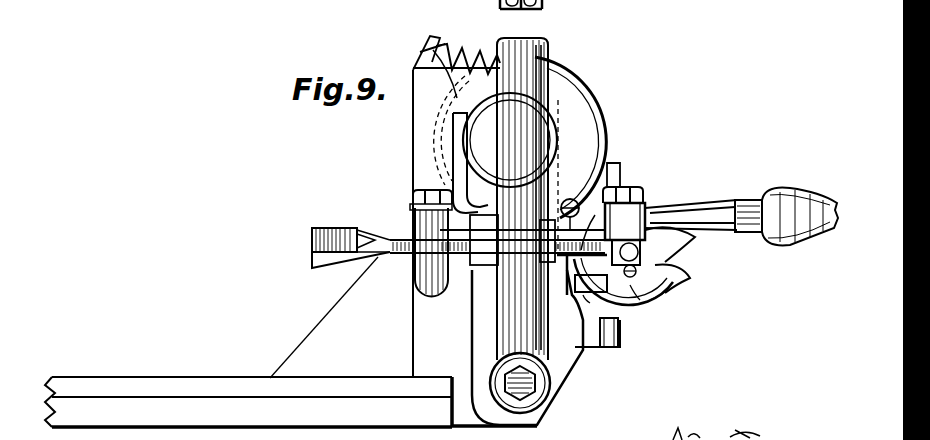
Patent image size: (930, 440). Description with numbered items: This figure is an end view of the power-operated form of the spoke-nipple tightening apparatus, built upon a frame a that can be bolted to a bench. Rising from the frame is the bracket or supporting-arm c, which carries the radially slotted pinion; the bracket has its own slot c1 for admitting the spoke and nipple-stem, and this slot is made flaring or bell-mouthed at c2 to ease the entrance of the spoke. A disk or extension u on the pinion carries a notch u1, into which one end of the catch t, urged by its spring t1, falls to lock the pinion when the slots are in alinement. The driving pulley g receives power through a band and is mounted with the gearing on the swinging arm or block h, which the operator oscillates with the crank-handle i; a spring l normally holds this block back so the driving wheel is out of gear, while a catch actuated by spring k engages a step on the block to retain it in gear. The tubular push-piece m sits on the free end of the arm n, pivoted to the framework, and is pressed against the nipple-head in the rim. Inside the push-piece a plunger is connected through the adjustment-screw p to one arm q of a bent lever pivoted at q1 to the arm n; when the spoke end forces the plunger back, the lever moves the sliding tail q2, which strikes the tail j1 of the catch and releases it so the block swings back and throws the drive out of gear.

The frame a is at (148, 390).
The spring k is at (317, 228).
The tail of catch j1 is at (378, 238).
The tail or projection q2 is at (400, 244).
The spring l is at (456, 206).
The flanged wheel or pulley g is at (563, 97).
The crank-handle i is at (510, 140).
The swinging arm or block h is at (471, 163).
The catch t is at (533, 280).
The spring t1 is at (570, 320).
The pivot of bent lever q1 is at (592, 200).
The tubular push-piece m is at (665, 220).
The arm n is at (625, 240).
The bracket or supporting-arm c is at (645, 293).
The slot c1 is at (662, 290).
The flaring or bell-mouthed portion c2 is at (697, 246).
The adjustment-screw p is at (630, 285).
The disk or extension u is at (660, 303).
The notch u1 is at (594, 307).
The arm of bent lever q is at (608, 350).